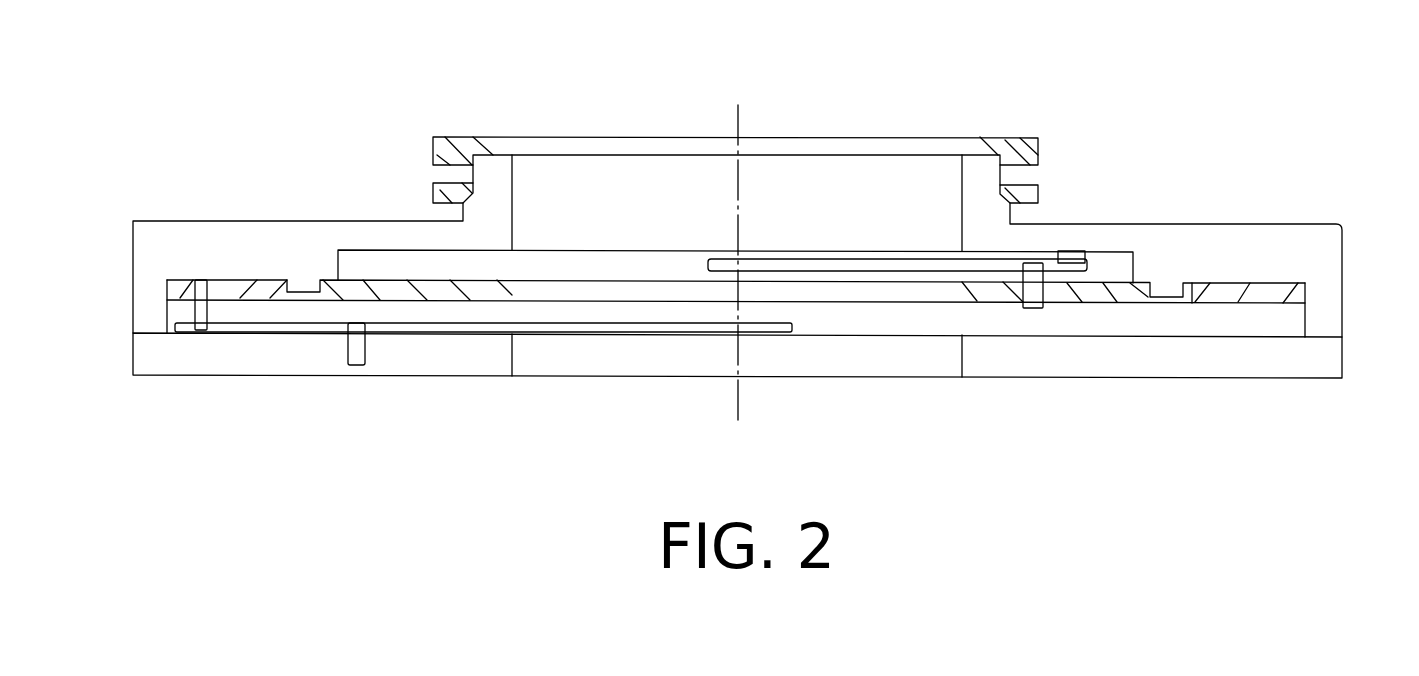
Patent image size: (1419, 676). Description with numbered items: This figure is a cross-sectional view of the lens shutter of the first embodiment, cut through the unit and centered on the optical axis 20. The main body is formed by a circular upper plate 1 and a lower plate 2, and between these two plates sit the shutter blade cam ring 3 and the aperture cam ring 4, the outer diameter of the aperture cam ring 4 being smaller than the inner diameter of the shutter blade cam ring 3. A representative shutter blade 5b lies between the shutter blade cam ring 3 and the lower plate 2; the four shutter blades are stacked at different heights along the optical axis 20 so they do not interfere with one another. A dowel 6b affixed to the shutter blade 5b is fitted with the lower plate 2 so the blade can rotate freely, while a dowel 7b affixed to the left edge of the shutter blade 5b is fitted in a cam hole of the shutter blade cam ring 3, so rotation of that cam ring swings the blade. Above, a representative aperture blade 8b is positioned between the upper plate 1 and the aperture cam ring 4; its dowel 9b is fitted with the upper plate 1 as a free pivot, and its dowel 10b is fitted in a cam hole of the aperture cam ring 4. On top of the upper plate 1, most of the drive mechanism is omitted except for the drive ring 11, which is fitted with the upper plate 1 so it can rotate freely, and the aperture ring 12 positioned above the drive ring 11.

The upper plate 1 is at (1325, 277).
The lower plate 2 is at (1322, 362).
The shutter blade cam ring 3 is at (1265, 295).
The aperture cam ring 4 is at (1113, 287).
The shutter blade 5b is at (263, 332).
The dowel 6b is at (357, 365).
The dowel 7b is at (200, 333).
The aperture blade 8b is at (923, 263).
The dowel 9b is at (1072, 257).
The dowel 10b is at (1033, 273).
The drive ring 11 is at (432, 193).
The aperture ring 12 is at (462, 145).
The optical axis 20 is at (743, 120).